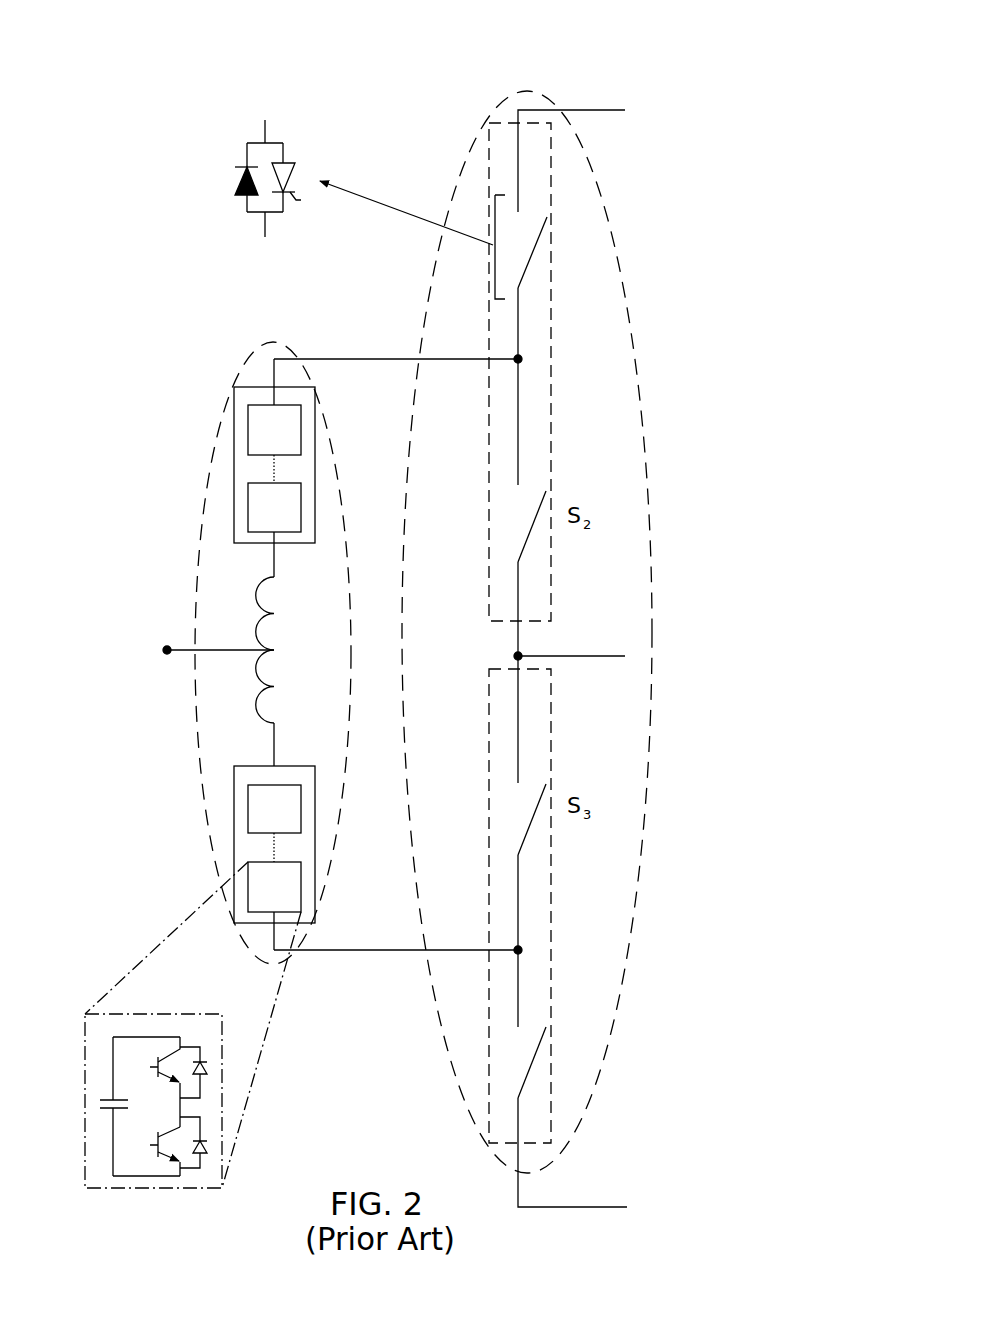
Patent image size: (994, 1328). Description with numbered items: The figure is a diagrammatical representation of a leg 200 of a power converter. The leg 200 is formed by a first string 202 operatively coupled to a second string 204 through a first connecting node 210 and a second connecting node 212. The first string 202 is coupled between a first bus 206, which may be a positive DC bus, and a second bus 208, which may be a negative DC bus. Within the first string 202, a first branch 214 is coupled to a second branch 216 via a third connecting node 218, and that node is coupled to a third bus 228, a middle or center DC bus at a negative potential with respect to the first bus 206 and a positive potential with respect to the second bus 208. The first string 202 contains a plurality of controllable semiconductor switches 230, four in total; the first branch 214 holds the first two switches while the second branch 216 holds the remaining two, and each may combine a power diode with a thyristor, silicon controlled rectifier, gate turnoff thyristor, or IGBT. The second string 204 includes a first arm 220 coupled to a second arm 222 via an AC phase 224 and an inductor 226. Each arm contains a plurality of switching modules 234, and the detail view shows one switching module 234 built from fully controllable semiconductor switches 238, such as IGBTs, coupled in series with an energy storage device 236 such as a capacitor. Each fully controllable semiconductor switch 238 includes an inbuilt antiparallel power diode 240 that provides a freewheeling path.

The leg 200 is at (233, 48).
The first string 202 is at (631, 268).
The second string 204 is at (207, 480).
The first bus 206 is at (609, 110).
The second bus 208 is at (597, 1207).
The first connecting node 210 is at (521, 358).
The second connecting node 212 is at (521, 949).
The first branch 214 is at (551, 148).
The second branch 216 is at (551, 1100).
The third connecting node 218 is at (521, 659).
The first arm 220 is at (253, 387).
The second arm 222 is at (233, 815).
The AC phase 224 is at (215, 648).
The inductor 226 is at (257, 702).
The third bus 228 is at (610, 655).
The controllable semiconductor switches 230 is at (290, 118).
The switching module 234 is at (248, 885).
The energy storage device 236 is at (105, 1108).
The fully controllable semiconductor switch 238 is at (158, 1147).
The power diode 240 is at (208, 1067).